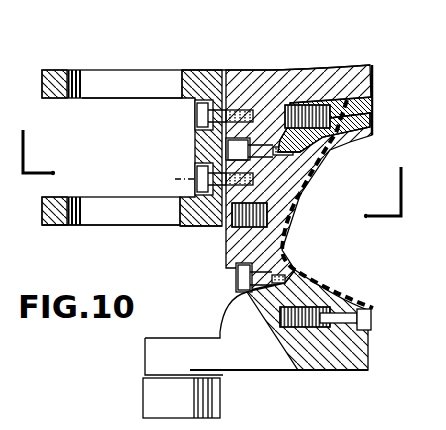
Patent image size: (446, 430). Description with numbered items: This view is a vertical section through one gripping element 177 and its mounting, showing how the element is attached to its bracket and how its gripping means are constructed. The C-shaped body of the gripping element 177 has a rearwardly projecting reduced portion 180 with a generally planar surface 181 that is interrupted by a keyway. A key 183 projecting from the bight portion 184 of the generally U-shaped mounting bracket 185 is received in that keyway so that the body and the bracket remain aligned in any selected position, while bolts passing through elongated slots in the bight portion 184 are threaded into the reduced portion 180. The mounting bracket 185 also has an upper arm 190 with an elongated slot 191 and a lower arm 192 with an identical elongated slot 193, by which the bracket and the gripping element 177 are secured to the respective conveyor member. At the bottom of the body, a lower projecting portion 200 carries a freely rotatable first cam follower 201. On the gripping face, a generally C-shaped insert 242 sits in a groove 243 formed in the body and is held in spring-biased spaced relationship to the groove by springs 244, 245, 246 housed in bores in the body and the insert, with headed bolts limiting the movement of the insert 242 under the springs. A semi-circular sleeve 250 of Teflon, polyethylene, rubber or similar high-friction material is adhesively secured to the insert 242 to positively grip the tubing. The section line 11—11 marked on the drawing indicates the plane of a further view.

The section line 11- 11 is at (233, 171).
The gripping element 177 is at (368, 354).
The reduced portion 180 is at (278, 86).
The planar surface 181 is at (220, 70).
The key 183 is at (323, 88).
The bight portion 184 is at (197, 137).
The mounting bracket 185 is at (128, 232).
The upper arm 190 is at (57, 70).
The elongated slot 191 is at (92, 98).
The lower arm 192 is at (58, 197).
The elongated slot 193 is at (100, 226).
The lower projecting portion 200 is at (230, 355).
The first cam follower 201 is at (152, 394).
The insert 242 is at (290, 230).
The groove 243 is at (366, 335).
The spring 244 is at (323, 145).
The spring 245 is at (230, 266).
The spring 246 is at (316, 290).
The semi-circular sleeve 250 is at (322, 160).